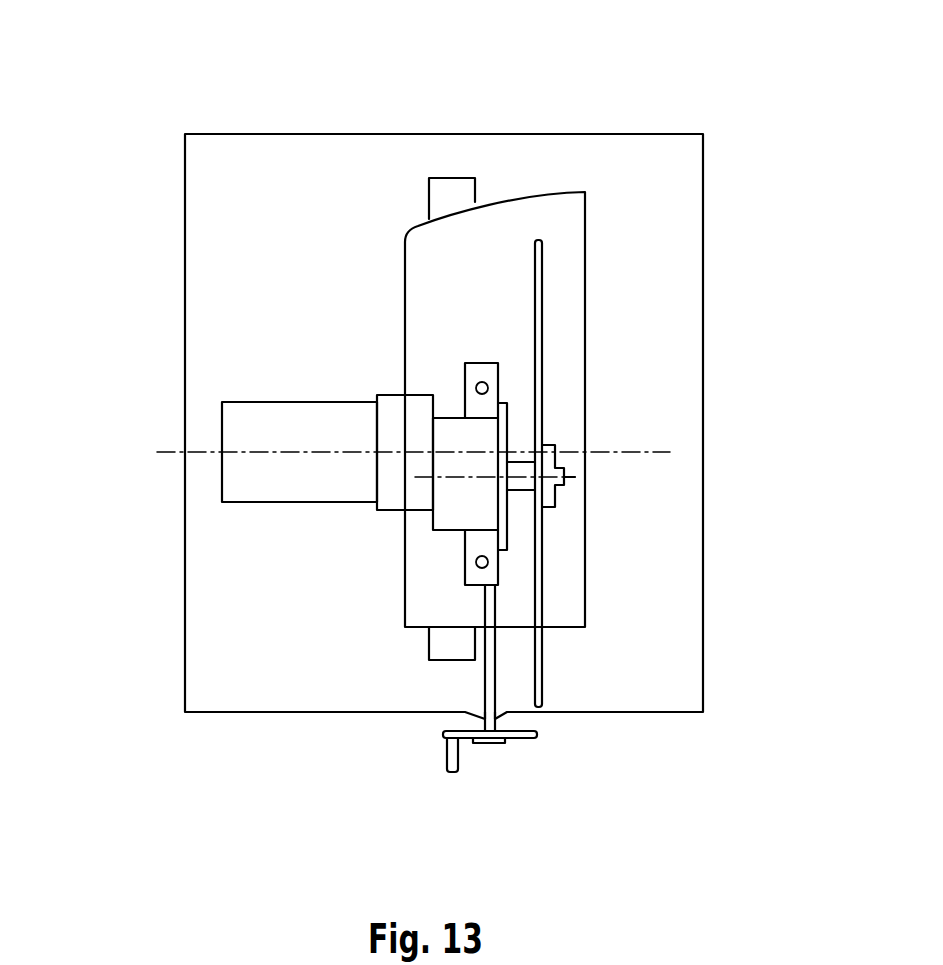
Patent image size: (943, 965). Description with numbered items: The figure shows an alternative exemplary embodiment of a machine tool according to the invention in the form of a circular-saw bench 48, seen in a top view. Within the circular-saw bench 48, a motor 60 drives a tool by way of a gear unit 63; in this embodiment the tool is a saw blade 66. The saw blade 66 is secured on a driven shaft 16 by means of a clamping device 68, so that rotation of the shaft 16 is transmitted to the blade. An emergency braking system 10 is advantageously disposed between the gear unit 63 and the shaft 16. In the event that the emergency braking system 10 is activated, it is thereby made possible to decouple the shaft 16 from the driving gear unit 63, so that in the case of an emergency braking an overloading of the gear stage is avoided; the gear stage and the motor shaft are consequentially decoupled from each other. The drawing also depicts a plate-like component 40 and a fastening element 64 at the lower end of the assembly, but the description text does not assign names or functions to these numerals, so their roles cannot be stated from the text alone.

The emergency braking system 10 is at (455, 433).
The driven shaft 16 is at (527, 472).
The mounting plate 40 is at (657, 693).
The circular-saw bench 48 is at (702, 80).
The motor 60 is at (235, 427).
The gear unit 63 is at (400, 498).
The fastening bracket 64 is at (520, 738).
The saw blade 66 is at (542, 340).
The clamping device 68 is at (567, 495).